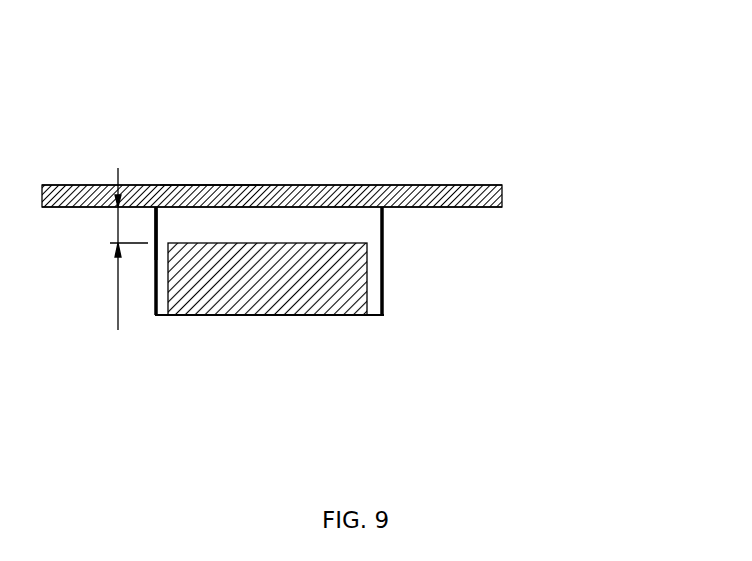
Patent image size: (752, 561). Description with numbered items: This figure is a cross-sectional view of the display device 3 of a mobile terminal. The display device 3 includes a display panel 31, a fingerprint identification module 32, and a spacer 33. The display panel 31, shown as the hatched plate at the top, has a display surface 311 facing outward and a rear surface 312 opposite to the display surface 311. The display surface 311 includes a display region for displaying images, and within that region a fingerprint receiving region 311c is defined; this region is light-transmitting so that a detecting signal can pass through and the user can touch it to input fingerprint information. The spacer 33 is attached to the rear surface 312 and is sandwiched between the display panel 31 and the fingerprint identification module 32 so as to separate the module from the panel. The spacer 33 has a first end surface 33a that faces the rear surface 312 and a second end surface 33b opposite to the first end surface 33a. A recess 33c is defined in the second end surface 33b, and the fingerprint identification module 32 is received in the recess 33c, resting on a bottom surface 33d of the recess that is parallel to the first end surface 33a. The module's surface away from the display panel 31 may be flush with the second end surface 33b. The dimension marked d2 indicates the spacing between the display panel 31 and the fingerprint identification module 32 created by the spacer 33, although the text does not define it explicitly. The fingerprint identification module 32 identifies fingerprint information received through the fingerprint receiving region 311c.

The display device 3 is at (413, 60).
The display panel 31 is at (505, 193).
The display surface 311 is at (440, 185).
The fingerprint receiving region 311c is at (208, 185).
The rear surface 312 is at (482, 206).
The fingerprint identification module 32 is at (353, 316).
The spacer 33 is at (384, 242).
The first end surface 33a is at (152, 192).
The second end surface 33b is at (162, 318).
The recess 33c is at (367, 288).
The bottom surface 33d is at (315, 245).
The gap distance d2 is at (114, 249).